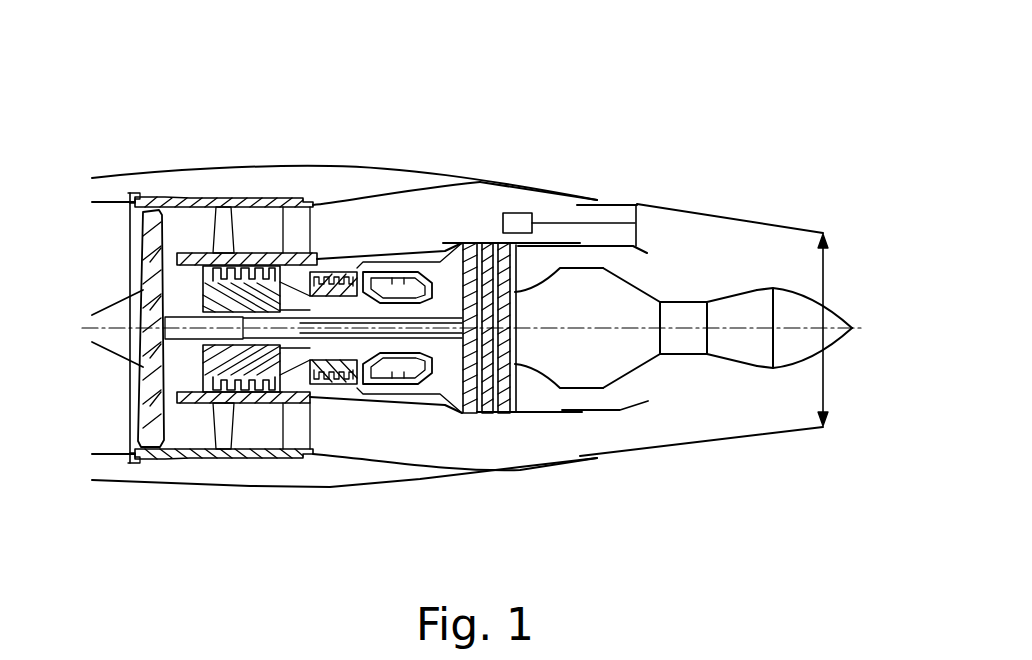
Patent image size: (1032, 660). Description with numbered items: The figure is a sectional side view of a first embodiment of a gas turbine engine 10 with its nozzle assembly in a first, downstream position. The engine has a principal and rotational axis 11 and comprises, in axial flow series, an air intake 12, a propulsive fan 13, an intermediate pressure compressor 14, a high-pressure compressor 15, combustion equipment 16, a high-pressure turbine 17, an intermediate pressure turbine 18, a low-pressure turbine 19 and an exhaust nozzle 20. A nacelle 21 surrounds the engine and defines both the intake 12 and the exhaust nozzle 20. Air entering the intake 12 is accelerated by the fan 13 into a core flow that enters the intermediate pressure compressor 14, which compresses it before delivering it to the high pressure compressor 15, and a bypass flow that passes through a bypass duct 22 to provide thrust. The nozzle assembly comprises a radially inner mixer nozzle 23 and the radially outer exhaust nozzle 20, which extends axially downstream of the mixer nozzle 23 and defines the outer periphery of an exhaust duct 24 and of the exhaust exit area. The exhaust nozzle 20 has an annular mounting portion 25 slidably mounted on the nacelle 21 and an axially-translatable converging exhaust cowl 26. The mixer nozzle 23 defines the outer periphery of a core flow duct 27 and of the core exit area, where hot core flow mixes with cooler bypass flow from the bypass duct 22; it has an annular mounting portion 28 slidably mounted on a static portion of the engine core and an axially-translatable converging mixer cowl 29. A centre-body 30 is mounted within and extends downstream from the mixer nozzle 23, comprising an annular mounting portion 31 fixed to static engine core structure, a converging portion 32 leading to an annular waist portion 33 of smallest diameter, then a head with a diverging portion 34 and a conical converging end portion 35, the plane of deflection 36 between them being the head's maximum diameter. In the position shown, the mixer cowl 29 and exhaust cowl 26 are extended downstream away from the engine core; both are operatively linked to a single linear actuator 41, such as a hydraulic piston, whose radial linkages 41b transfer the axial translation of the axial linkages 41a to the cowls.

The gas turbine engine 10 is at (122, 135).
The principal and rotational axis 11 is at (110, 340).
The air intake 12 is at (112, 222).
The propulsive fan 13 is at (143, 245).
The intermediate pressure compressor 14 is at (240, 405).
The high-pressure compressor 15 is at (320, 270).
The combustion equipment 16 is at (400, 386).
The high-pressure turbine 17 is at (420, 270).
The intermediate pressure turbine 18 is at (460, 412).
The low-pressure turbine 19 is at (470, 245).
The exhaust nozzle 20 is at (813, 215).
The nacelle 21 is at (230, 188).
The bypass duct 22 is at (344, 326).
The mixer nozzle 23 is at (603, 241).
The exhaust duct 24 is at (756, 330).
The annular mounting portion 25 is at (612, 454).
The converging exhaust cowl 26 is at (757, 442).
The core flow duct 27 is at (545, 258).
The annular mounting portion 28 is at (593, 412).
The converging mixer cowl 29 is at (648, 400).
The centre-body 30 is at (559, 328).
The annular mounting portion 31 is at (597, 198).
The converging portion 32 is at (650, 275).
The annular waist portion 33 is at (685, 356).
The diverging portion 34 is at (722, 298).
The converging end portion 35 is at (803, 368).
The plane of deflection 36 is at (770, 285).
The linear actuator 41 is at (522, 213).
The axial linkages 41a is at (560, 250).
The radial linkages 41b is at (632, 250).